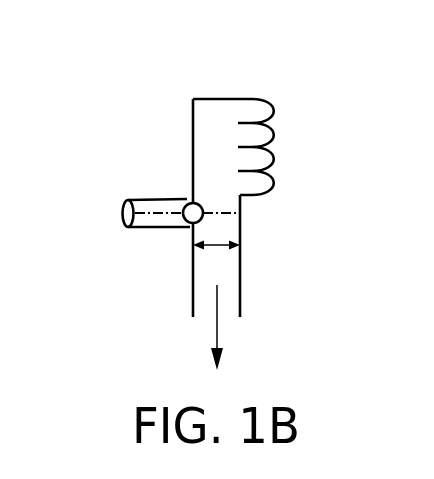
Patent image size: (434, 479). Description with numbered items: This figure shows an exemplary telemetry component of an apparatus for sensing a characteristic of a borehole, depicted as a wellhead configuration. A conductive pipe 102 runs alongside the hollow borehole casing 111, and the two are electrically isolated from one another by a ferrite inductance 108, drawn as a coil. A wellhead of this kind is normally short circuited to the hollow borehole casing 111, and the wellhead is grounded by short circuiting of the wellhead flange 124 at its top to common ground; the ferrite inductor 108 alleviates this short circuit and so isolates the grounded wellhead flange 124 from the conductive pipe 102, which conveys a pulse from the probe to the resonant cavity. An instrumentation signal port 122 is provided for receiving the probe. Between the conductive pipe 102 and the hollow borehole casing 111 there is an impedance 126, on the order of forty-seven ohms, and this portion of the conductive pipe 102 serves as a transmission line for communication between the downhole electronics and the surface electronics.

The conductive pipe 102 is at (240, 227).
The ferrite inductance 108 is at (275, 160).
The hollow borehole casing 111 is at (193, 280).
The instrumentation signal port 122 is at (156, 199).
The wellhead flange 124 is at (223, 99).
The impedance 126 is at (217, 247).